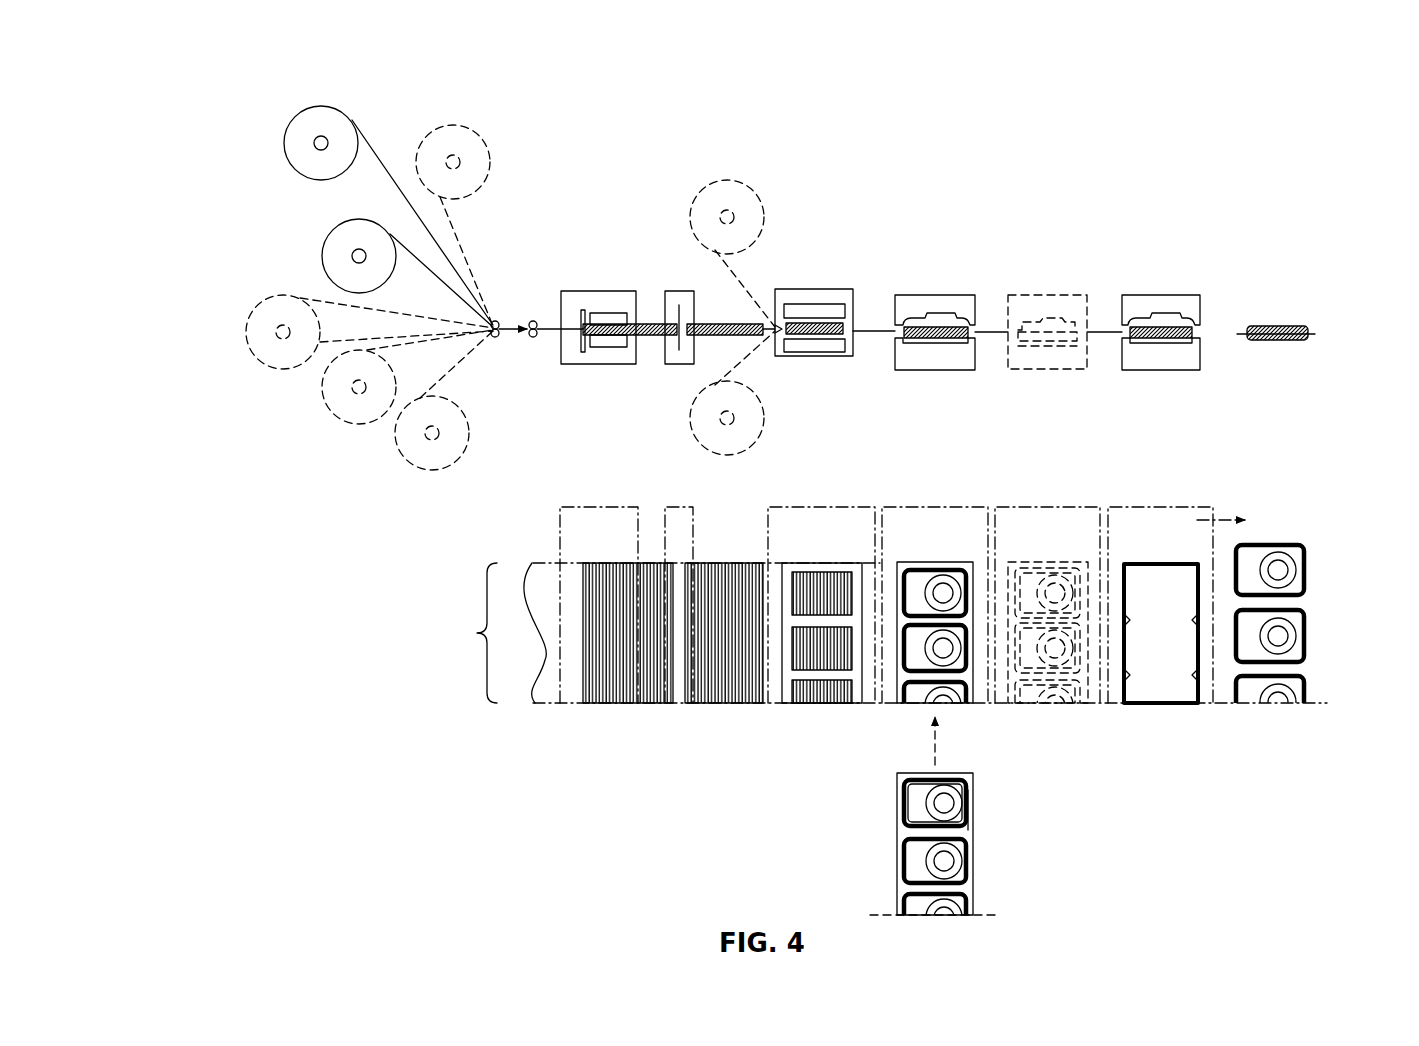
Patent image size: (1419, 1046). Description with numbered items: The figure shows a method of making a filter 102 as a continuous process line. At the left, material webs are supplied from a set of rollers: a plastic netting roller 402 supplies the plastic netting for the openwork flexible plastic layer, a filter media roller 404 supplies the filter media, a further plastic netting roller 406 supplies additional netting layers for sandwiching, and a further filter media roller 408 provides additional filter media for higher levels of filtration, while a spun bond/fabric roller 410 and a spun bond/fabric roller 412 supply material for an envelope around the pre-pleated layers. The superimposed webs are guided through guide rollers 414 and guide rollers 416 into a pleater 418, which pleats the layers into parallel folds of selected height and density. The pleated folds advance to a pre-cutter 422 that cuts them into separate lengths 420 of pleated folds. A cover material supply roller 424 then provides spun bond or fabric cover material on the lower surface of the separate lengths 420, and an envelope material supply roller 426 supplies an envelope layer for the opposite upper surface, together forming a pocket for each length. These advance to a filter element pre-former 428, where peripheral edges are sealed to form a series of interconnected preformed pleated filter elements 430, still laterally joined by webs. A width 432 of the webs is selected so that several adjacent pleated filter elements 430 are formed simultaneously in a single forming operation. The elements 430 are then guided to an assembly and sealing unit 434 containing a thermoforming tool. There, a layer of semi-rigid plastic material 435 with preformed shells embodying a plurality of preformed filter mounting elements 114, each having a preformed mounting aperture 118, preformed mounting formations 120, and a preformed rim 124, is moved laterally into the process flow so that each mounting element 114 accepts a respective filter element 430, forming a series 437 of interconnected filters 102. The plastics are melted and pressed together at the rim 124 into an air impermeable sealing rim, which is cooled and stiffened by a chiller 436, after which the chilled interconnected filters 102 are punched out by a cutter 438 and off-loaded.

The filter 102 is at (1282, 324).
The preformed filter mounting element 114 is at (915, 818).
The preformed mounting aperture 118 is at (950, 810).
The preformed mounting formations 120 is at (968, 817).
The preformed rim 124 is at (900, 822).
The plastic netting roller 402 is at (284, 143).
The filter media roller 404 is at (322, 255).
The plastic netting roller 406 is at (323, 395).
The filter media roller 408 is at (247, 335).
The spun bond/fabric roller 410 is at (490, 162).
The spun bond/fabric roller 412 is at (395, 445).
The guide rollers 414 is at (497, 320).
The guide rollers 416 is at (537, 346).
The pleater 418 is at (598, 250).
The separate lengths of pleated folds 420 is at (755, 334).
The pre-cutter 422 is at (675, 220).
The cover material supply roller 424 is at (700, 415).
The envelope material supply roller 426 is at (738, 183).
The filter element pre-former 428 is at (812, 190).
The preformed pleated filter elements 430 is at (838, 583).
The width 432 is at (877, 589).
The assembly and sealing unit 434 is at (931, 172).
The layer of semi-rigid plastic material 435 is at (973, 853).
The chiller 436 is at (1046, 262).
The series of interconnected filters 437 is at (1027, 577).
The cutter 438 is at (1164, 262).